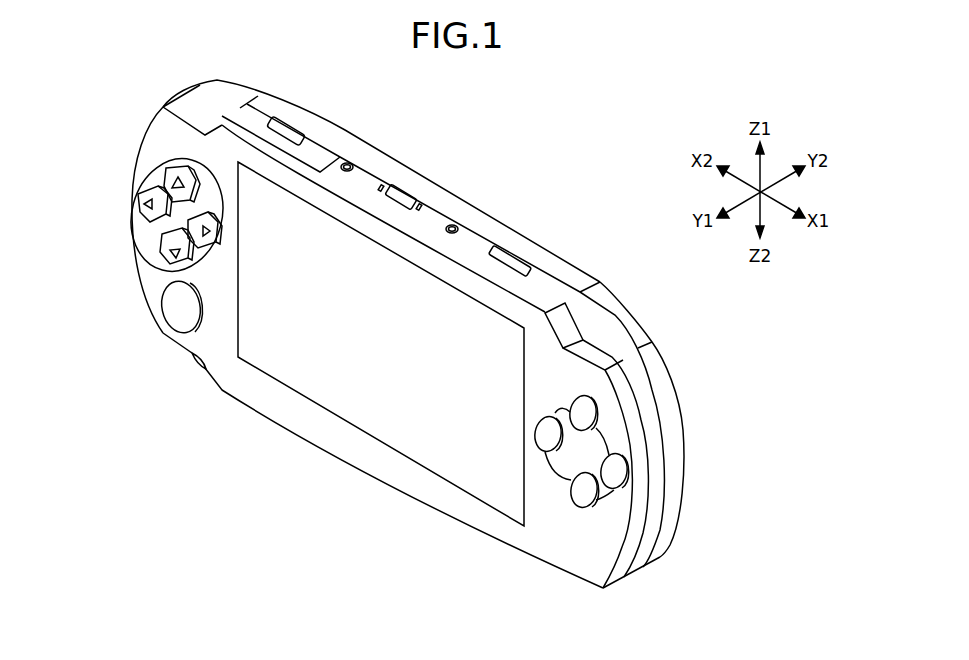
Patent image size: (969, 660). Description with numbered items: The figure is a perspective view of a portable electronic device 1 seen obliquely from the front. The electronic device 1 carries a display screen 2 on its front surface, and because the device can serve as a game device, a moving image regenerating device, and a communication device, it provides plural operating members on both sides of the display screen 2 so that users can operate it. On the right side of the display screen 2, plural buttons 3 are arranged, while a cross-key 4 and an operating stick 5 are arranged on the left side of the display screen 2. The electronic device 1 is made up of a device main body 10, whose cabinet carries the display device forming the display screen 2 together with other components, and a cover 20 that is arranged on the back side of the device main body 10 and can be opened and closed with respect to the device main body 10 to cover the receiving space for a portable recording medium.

The electronic device 1 is at (408, 334).
The display screen 2 is at (412, 443).
The buttons 3 is at (578, 422).
The cross-key 4 is at (152, 247).
The operating stick 5 is at (179, 314).
The device main body 10 is at (312, 453).
The cover 20 is at (492, 178).